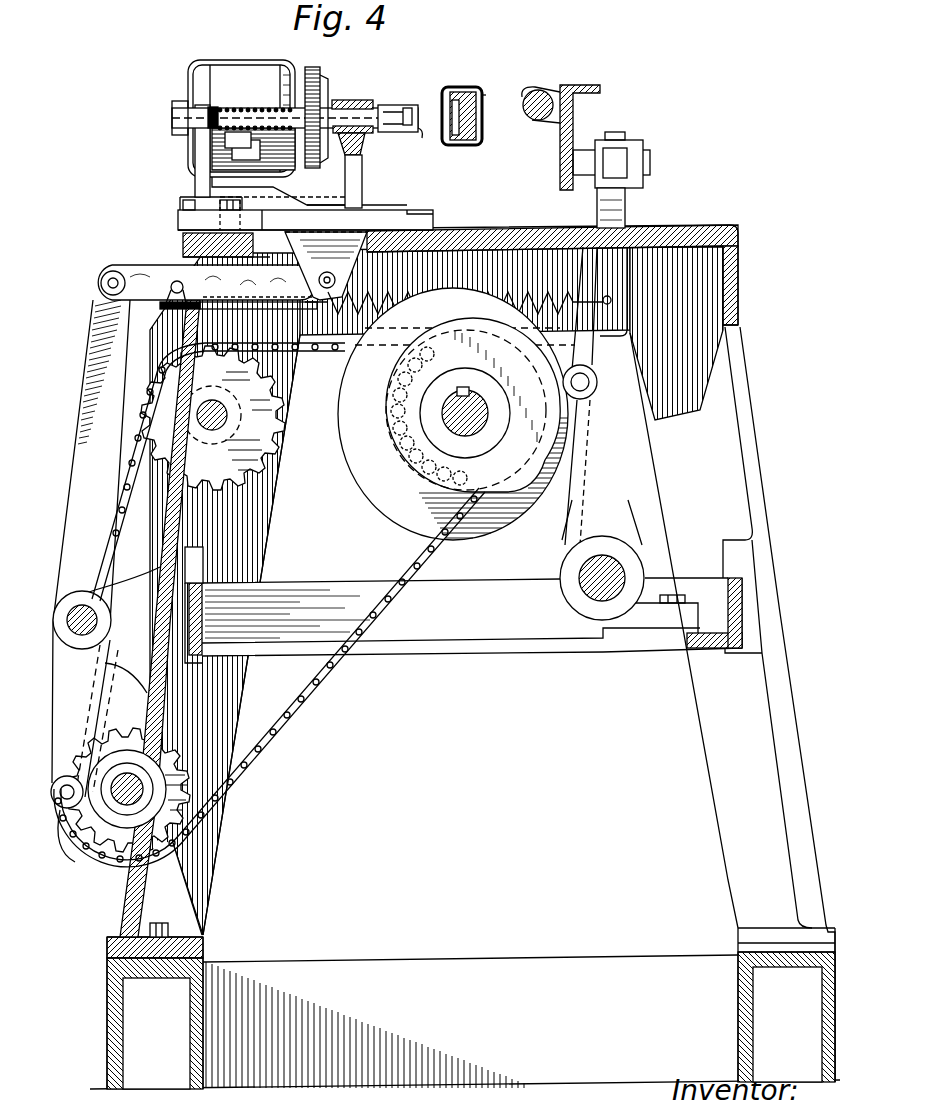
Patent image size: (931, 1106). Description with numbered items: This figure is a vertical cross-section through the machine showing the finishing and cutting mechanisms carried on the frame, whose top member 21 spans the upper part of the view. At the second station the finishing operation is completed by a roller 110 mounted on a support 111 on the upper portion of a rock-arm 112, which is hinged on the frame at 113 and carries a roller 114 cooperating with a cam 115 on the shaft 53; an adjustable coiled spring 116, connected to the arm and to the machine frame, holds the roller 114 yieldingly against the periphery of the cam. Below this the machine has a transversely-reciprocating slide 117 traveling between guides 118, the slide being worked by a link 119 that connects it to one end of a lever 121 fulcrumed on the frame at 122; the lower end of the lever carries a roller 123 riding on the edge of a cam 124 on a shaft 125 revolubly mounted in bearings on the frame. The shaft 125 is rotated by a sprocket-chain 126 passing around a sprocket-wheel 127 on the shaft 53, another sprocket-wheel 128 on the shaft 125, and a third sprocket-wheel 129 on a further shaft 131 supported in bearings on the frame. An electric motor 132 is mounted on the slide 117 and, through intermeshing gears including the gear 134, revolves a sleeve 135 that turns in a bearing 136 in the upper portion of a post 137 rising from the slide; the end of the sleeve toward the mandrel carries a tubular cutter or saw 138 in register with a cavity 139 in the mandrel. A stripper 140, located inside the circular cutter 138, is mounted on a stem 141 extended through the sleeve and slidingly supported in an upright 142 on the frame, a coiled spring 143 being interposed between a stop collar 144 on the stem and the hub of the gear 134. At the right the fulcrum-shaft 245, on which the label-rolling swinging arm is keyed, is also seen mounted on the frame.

The frame 21 is at (672, 228).
The shaft 53 is at (457, 425).
The roller 110 is at (524, 106).
The support 111 is at (560, 148).
The rock-arm 112 is at (620, 277).
The hinge 113 is at (568, 596).
The roller 114 is at (600, 372).
The cam 115 is at (538, 505).
The coiled spring 116 is at (352, 290).
The slide 117 is at (348, 216).
The guides 118 is at (396, 203).
The link 119 is at (138, 268).
The lever 121 is at (82, 408).
The fulcrum 122 is at (98, 619).
The roller 123 is at (66, 808).
The cam 124 is at (95, 842).
The shaft 125 is at (122, 770).
The sprocket-chain 126 is at (332, 674).
The sprocket-wheel 127 is at (470, 513).
The sprocket-wheel 128 is at (172, 736).
The sprocket-wheel 129 is at (213, 435).
The shaft 131 is at (217, 400).
The electric motor 132 is at (241, 118).
The gear 134 is at (318, 95).
The sleeve 135 is at (295, 146).
The bearing 136 is at (362, 101).
The post 137 is at (362, 183).
The tubular cutter 138 is at (400, 104).
The cavity 139 is at (458, 86).
The stripper 140 is at (415, 142).
The stem 141 is at (253, 149).
The upright 142 is at (203, 140).
The coiled spring 143 is at (242, 141).
The stop collar 144 is at (214, 106).
The fulcrum-shaft 245 is at (585, 572).